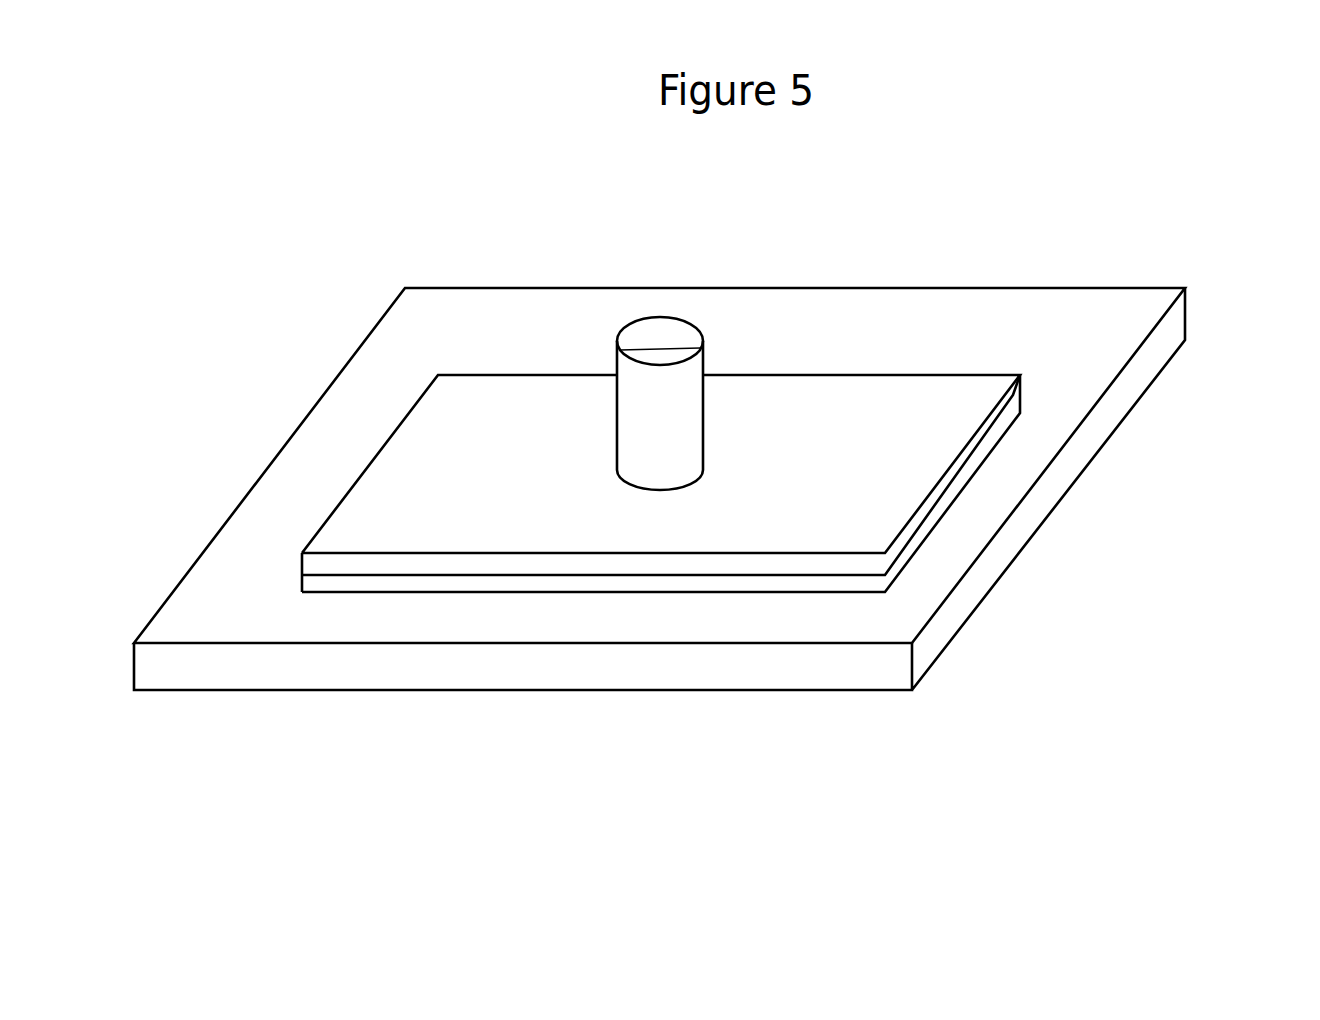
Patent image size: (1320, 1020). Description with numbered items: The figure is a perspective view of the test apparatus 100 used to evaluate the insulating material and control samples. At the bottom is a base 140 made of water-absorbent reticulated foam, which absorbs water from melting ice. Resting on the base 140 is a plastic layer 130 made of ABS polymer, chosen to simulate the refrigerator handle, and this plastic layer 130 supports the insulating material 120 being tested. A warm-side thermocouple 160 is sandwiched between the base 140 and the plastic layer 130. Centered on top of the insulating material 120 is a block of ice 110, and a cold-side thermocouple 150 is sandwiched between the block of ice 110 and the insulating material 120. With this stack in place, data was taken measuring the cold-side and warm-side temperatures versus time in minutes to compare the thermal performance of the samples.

The test apparatus 100 is at (1027, 218).
The block of ice 110 is at (663, 317).
The insulating material 120 is at (940, 392).
The plastic layer 130 is at (927, 527).
The base 140 is at (932, 658).
The cold-side thermocouple 150 is at (703, 464).
The warm-side thermocouple 160 is at (953, 502).